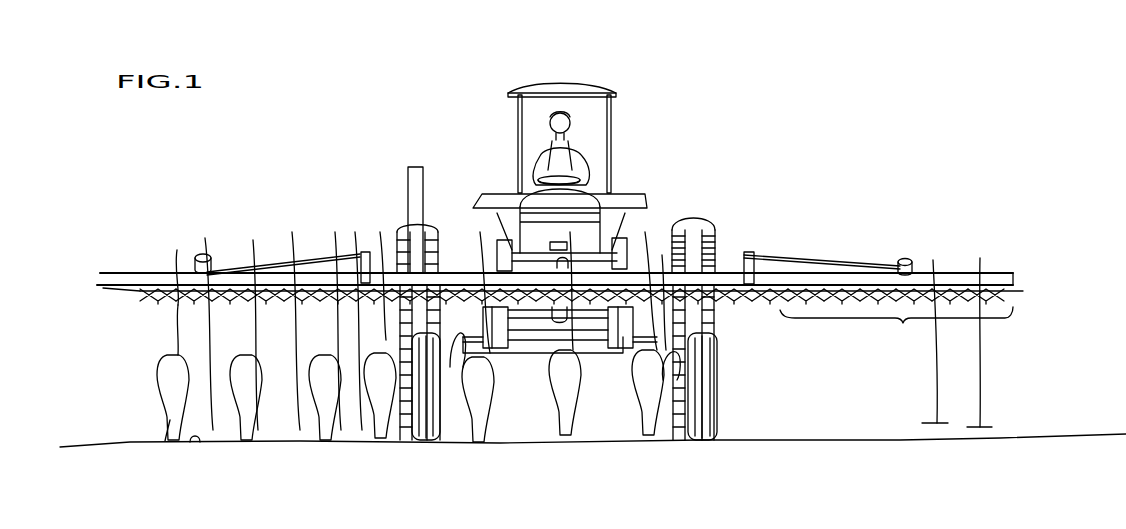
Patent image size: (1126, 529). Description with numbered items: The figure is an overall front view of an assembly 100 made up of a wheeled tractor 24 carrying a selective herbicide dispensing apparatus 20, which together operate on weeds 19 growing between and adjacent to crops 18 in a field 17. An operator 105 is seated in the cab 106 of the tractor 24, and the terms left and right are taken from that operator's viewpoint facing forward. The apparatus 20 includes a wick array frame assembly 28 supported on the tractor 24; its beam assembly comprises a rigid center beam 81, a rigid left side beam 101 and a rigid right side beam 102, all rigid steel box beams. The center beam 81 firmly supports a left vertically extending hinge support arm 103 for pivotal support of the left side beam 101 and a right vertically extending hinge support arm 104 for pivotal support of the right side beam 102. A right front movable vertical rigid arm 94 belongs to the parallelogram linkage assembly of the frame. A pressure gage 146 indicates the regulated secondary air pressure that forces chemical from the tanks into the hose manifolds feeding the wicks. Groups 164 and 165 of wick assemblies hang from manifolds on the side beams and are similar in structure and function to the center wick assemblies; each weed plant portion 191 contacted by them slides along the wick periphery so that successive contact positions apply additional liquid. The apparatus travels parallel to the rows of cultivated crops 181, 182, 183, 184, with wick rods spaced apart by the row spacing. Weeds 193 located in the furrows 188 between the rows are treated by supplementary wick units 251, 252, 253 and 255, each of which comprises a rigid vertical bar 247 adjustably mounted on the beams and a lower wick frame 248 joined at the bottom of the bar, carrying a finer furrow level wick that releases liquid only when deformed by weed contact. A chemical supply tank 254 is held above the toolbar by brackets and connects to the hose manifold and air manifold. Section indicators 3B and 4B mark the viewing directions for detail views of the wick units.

The assembly 100 is at (956, 206).
The wick array frame assembly 28 is at (307, 283).
The group of wick assemblies 164 is at (140, 307).
The group of wick assemblies 165 is at (896, 330).
The rigid right side beam 102 is at (228, 272).
The right vertically extending hinge support arm 104 is at (363, 252).
The rigid left side beam 101 is at (768, 280).
The left vertically extending hinge support arm 103 is at (743, 253).
The selective herbicide dispensing apparatus 20 is at (815, 242).
The view direction 3B is at (667, 189).
The view direction 4B is at (1063, 233).
The pressure gage 146 is at (408, 185).
The right front movable vertical rigid arm 94 is at (506, 243).
The rigid center beam 81 is at (571, 258).
The tractor 24 is at (578, 208).
The operator 105 is at (538, 160).
The cab 106 is at (522, 176).
The weeds 19 is at (177, 262).
The weed plant portion 191 is at (177, 348).
The crops 18 is at (158, 400).
The field 17 is at (128, 440).
The row of cultivated crops 181 is at (170, 420).
The weeds 193 is at (197, 442).
The furrow 188 is at (217, 443).
The row of cultivated crops 182 is at (252, 413).
The supplementary wick unit 251 is at (222, 440).
The row of cultivated crops 183 is at (328, 407).
The supplementary wick unit 252 is at (295, 402).
The row of cultivated crops 184 is at (381, 417).
The supplementary wick unit 253 is at (357, 417).
The chemical supply tank 254 is at (935, 380).
The rigid vertical bar 247 is at (981, 380).
The lower wick frame 248 is at (1000, 427).
The supplementary wick unit 255 is at (1035, 342).